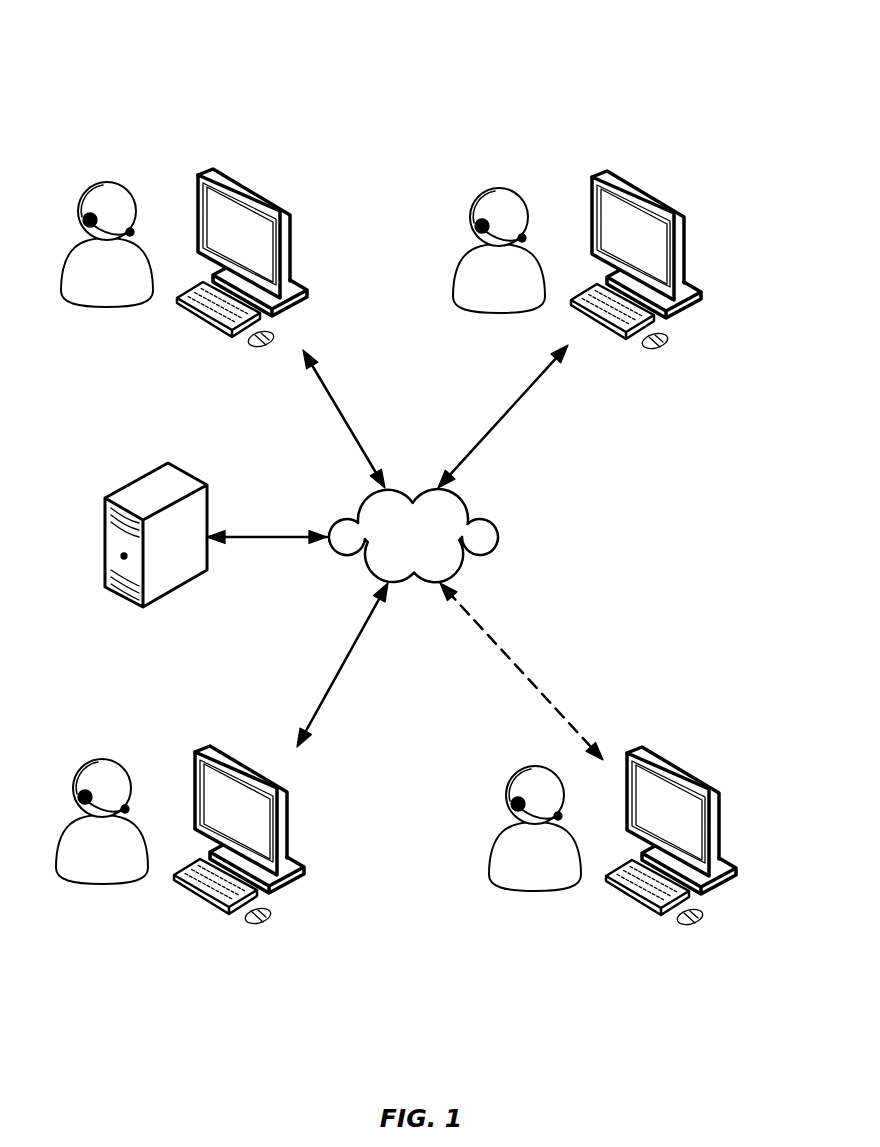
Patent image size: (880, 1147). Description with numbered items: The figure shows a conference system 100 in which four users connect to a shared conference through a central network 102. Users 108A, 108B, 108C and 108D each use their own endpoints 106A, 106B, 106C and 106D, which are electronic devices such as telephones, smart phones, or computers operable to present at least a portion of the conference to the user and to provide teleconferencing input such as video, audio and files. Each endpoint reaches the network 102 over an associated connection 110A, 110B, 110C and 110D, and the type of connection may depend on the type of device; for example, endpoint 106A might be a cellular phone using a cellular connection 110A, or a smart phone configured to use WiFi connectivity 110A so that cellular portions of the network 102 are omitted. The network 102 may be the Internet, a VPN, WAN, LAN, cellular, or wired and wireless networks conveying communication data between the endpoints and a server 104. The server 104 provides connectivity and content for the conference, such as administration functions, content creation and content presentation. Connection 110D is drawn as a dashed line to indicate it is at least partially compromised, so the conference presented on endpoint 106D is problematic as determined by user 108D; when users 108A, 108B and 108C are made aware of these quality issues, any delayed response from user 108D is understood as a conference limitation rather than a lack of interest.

The conference system 100 is at (685, 73).
The network 102 is at (497, 535).
The server 104 is at (130, 483).
The endpoint 106A is at (258, 198).
The endpoint 106B is at (657, 195).
The endpoint 106C is at (212, 750).
The endpoint 106D is at (677, 768).
The user 108A is at (72, 283).
The user 108B is at (526, 290).
The user 108C is at (130, 865).
The user 108D is at (565, 870).
The connection 110A is at (338, 402).
The connection 110B is at (527, 393).
The connection 110C is at (345, 660).
The connection 110D is at (518, 665).